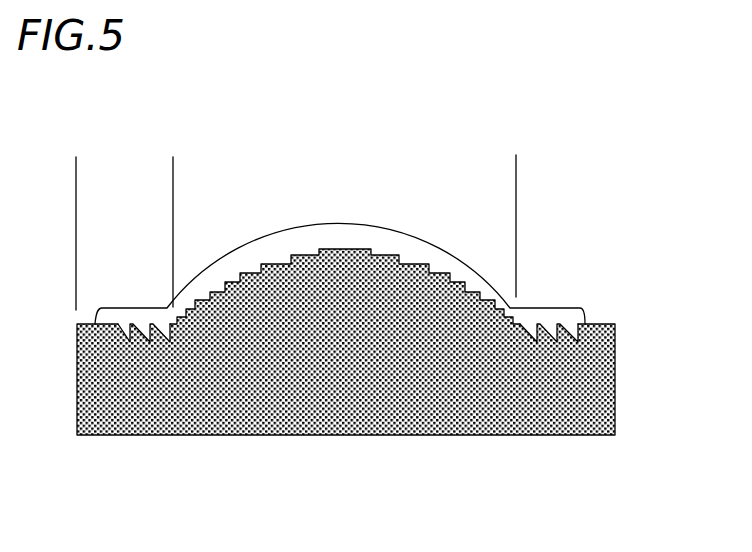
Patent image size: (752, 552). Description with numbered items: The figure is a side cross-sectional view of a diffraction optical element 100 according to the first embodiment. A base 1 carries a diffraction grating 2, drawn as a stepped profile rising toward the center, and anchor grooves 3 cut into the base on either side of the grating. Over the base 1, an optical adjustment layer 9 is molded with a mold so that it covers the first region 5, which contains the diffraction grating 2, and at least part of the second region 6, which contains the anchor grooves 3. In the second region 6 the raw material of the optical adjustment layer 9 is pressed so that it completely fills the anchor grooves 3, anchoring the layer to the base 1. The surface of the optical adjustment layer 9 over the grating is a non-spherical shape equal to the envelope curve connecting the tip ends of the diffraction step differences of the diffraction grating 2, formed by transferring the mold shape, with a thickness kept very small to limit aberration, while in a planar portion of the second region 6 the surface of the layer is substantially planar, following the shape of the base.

The diffraction optical element 100 is at (373, 295).
The base 1 is at (323, 410).
The diffraction grating 2 is at (362, 257).
The anchor grooves 3 is at (579, 343).
The first region 5 is at (173, 164).
The second region 6 is at (76, 164).
The optical adjustment layer 9 is at (423, 245).